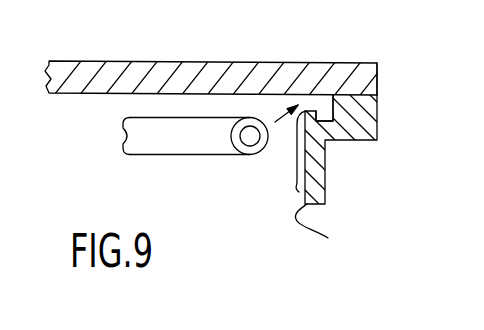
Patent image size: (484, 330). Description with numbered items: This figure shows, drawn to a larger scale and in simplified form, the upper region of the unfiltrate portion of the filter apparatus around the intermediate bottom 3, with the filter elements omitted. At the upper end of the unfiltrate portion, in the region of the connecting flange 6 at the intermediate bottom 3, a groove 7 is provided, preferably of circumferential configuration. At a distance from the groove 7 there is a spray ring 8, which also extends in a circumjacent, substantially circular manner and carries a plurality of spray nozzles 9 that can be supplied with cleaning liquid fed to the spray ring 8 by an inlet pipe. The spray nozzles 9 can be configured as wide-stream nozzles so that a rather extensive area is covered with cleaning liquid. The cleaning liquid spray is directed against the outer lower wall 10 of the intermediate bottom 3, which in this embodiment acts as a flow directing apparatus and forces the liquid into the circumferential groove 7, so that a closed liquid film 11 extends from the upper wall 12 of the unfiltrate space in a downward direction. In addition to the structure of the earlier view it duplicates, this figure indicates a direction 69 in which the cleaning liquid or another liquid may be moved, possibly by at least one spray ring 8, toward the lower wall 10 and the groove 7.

The intermediate bottom 3 is at (205, 62).
The outer lower wall 10 is at (337, 63).
The direction 69 is at (275, 122).
The connecting flange 6 is at (360, 129).
The groove 7 is at (322, 113).
The closed liquid film 11 is at (298, 173).
The upper wall 12 is at (325, 231).
The spray ring 8 is at (148, 156).
The spray nozzles 9 is at (243, 153).